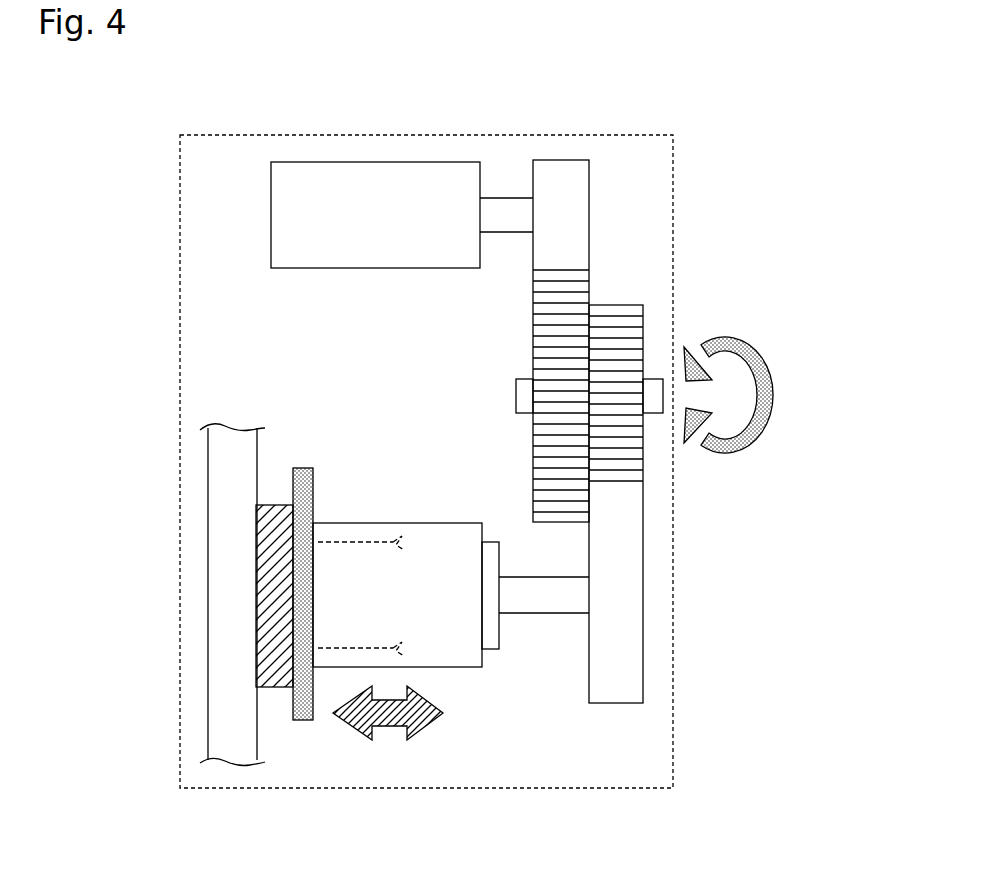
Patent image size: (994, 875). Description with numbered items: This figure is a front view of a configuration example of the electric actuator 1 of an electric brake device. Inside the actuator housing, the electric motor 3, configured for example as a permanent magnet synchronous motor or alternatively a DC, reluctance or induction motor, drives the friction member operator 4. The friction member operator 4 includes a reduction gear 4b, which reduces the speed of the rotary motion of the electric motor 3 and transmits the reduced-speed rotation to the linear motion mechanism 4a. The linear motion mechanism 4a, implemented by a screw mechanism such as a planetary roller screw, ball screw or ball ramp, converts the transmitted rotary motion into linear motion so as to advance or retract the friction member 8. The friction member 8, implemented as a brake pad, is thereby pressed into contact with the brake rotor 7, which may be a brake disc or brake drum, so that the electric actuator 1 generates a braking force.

The electric actuator 1 is at (182, 238).
The electric motor 3 is at (318, 175).
The friction member operator 4 is at (407, 447).
The linear motion mechanism 4a is at (361, 527).
The reduction gear 4b is at (657, 465).
The brake rotor 7 is at (230, 460).
The friction member 8 is at (287, 684).